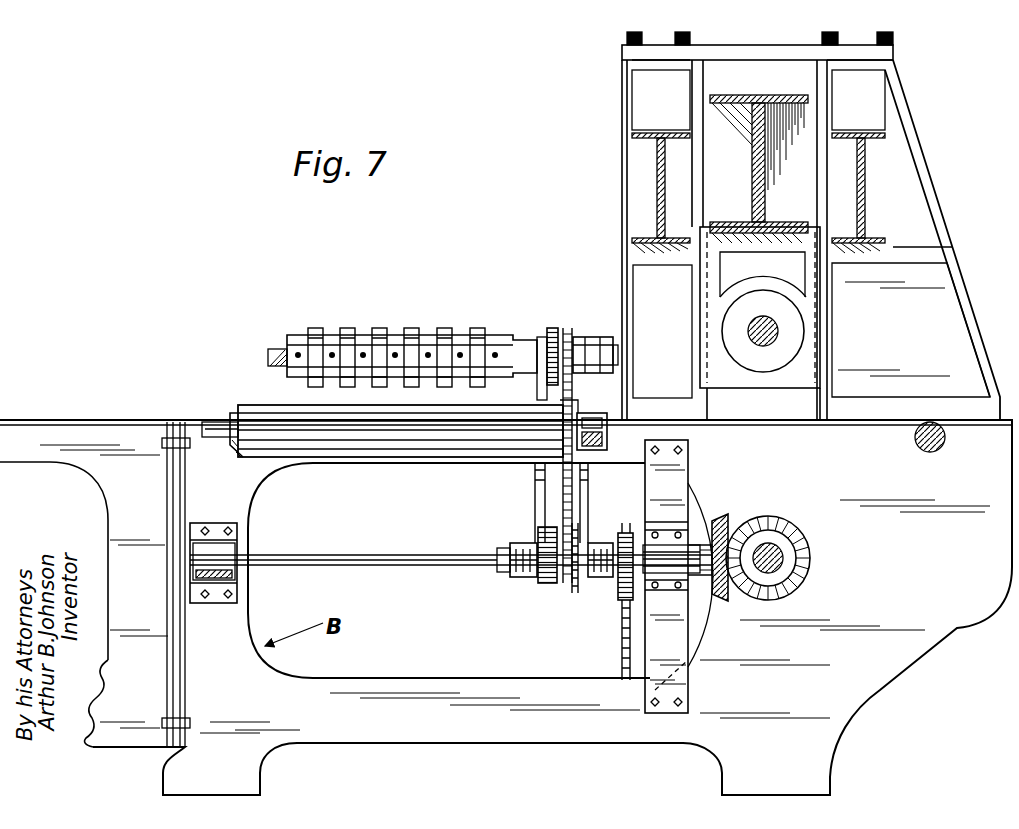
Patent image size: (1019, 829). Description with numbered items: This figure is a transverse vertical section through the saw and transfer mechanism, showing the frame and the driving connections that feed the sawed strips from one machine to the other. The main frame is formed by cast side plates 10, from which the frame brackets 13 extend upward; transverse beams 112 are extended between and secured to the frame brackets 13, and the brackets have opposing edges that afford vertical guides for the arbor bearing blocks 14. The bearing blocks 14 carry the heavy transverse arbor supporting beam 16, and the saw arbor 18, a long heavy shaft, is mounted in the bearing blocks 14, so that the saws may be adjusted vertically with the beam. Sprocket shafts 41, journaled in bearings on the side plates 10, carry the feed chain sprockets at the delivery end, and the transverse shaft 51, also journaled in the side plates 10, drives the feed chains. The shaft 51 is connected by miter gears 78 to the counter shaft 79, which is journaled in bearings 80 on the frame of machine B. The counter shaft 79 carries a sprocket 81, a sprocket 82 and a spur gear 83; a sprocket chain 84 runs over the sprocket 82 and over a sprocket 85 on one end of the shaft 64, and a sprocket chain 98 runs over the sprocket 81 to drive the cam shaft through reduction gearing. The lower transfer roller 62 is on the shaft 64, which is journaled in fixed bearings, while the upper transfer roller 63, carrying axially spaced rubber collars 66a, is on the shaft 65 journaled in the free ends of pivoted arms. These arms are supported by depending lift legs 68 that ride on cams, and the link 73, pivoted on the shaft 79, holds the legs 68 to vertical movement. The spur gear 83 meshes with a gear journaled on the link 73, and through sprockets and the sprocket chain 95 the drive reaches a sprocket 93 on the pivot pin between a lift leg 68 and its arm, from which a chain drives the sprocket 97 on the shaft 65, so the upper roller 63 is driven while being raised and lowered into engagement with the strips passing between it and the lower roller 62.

The side plates 10 is at (506, 538).
The frame brackets 13 is at (811, 226).
The arbor bearing blocks 14 is at (812, 304).
The arbor supporting beam 16 is at (762, 168).
The saw arbor 18 is at (777, 345).
The sprocket shafts 41 is at (944, 445).
The transverse shaft 51 is at (777, 563).
The lower transfer roller 62 is at (315, 437).
The upper transfer roller 63 is at (407, 332).
The lower roller shaft 64 is at (211, 421).
The upper roller shaft 65 is at (281, 347).
The rubber collars 66a is at (485, 316).
The lift legs 68 is at (610, 343).
The link 73 is at (517, 582).
The miter gears 78 is at (762, 486).
The counter shaft 79 is at (455, 568).
The bearings 80 is at (215, 583).
The sprocket 81 is at (624, 536).
The sprocket 82 is at (569, 593).
The spur gear 83 is at (543, 590).
The sprocket chain 84 is at (563, 482).
The sprocket 85 is at (590, 410).
The sprocket 93 is at (569, 328).
The sprocket chain 95 is at (580, 410).
The sprocket 97 is at (551, 328).
The sprocket chain 98 is at (620, 645).
The transverse beams 112 is at (657, 177).